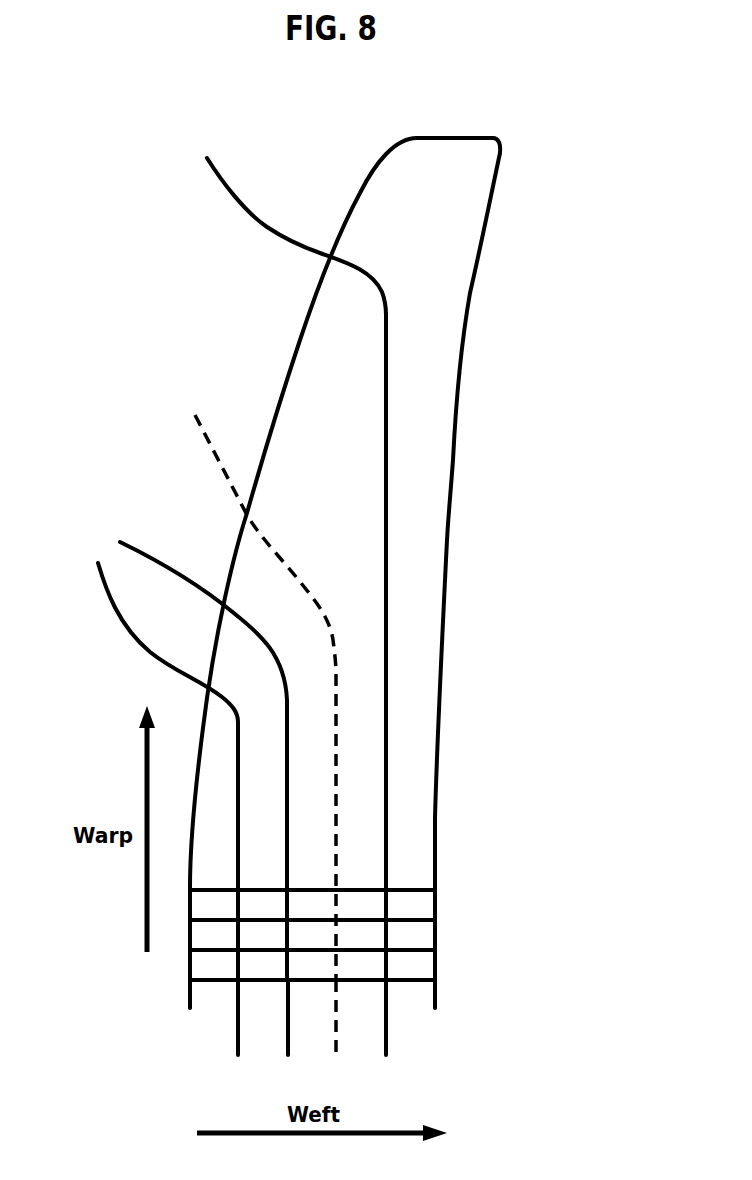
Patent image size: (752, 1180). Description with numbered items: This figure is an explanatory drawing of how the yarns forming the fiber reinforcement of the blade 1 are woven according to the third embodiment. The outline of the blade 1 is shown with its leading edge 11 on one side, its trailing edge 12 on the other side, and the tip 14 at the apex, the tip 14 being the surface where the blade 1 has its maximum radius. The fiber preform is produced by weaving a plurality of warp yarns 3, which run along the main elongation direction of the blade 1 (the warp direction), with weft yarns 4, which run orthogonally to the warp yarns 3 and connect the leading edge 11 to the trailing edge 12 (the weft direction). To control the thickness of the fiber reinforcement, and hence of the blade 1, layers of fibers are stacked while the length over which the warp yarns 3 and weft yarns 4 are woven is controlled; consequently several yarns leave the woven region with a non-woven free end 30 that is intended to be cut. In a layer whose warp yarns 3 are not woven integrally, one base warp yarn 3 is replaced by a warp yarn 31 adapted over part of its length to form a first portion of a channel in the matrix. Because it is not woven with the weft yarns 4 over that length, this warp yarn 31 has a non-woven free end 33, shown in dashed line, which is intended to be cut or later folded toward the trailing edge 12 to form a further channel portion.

The blade 1 is at (404, 546).
The leading edge 11 is at (287, 372).
The trailing edge 12 is at (449, 531).
The tip 14 is at (455, 138).
The warp yarn 3 is at (235, 1027).
The weft yarn 4 is at (410, 918).
The non-woven free end 30 is at (231, 203).
The warp yarn adapted to form a channel portion 31 is at (333, 1027).
The non-woven free end 33 is at (203, 440).